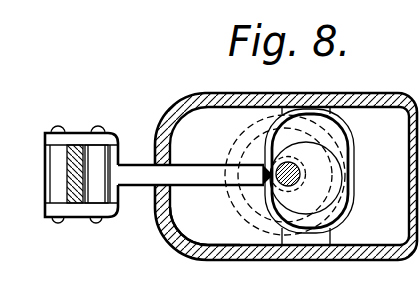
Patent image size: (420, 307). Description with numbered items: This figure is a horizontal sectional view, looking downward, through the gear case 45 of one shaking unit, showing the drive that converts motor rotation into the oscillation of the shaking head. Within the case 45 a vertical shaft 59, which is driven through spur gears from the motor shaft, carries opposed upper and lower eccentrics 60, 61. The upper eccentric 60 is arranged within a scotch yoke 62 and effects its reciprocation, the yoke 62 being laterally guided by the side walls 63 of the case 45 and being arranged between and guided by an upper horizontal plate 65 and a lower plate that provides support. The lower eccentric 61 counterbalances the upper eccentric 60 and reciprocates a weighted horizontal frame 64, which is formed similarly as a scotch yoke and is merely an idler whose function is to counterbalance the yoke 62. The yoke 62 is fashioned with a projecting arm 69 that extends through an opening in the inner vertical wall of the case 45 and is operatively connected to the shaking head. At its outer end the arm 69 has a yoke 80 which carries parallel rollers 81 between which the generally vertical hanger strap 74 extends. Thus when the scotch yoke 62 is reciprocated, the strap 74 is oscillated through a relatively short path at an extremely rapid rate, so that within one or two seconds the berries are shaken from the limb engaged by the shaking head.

The gear case 45 is at (380, 104).
The side walls 63 is at (317, 107).
The weighted horizontal frame 64 is at (230, 236).
The projecting arm 69 is at (200, 186).
The scotch yoke 62 is at (284, 120).
The upper eccentric 60 is at (322, 165).
The vertical shaft 59 is at (298, 182).
The lower eccentric 61 is at (253, 152).
The upper horizontal plate 65 is at (260, 233).
The yoke 80 is at (50, 134).
The hanger strap 74 is at (78, 204).
The rollers 81 is at (99, 150).